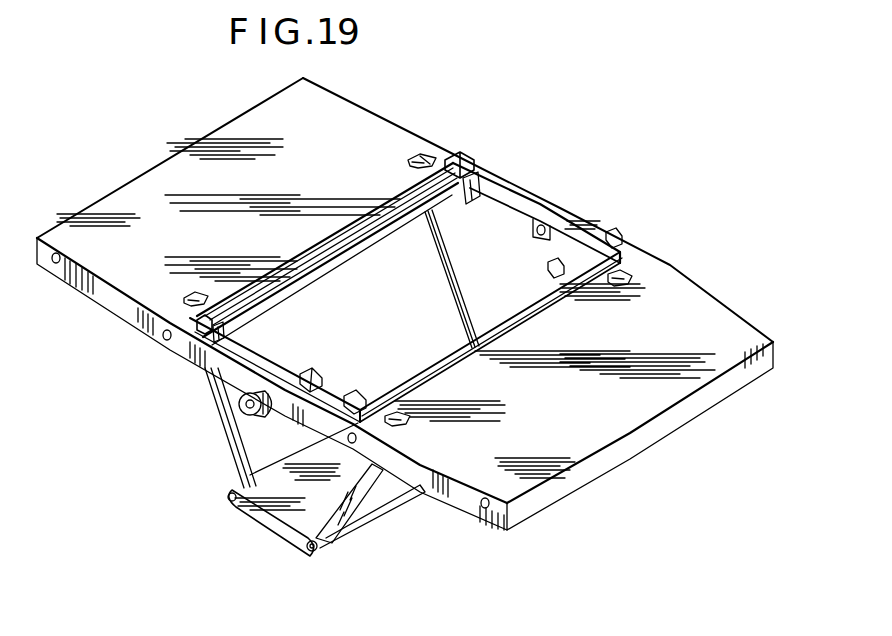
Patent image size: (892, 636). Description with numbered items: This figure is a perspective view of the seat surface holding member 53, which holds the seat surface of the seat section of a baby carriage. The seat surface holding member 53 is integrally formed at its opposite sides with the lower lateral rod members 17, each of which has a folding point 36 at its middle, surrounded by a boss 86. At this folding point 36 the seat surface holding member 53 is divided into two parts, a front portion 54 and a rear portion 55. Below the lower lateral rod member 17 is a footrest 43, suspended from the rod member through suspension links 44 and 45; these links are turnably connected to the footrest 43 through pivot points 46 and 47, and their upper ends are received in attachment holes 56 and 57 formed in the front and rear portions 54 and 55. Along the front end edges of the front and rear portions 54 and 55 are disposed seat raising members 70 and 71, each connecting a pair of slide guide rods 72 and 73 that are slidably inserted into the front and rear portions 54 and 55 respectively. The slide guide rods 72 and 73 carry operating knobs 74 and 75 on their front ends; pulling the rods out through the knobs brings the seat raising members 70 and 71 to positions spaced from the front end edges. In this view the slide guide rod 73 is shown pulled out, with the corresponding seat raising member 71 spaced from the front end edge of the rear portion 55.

The lower lateral rod member 17 is at (533, 190).
The folding point 36 is at (556, 208).
The footrest 43 is at (384, 508).
The suspension link 44 is at (517, 178).
The suspension link 45 is at (346, 512).
The pivot point 46 is at (229, 505).
The pivot point 47 is at (306, 551).
The seat surface holding member 53 is at (405, 293).
The front portion 54 is at (348, 126).
The rear portion 55 is at (684, 300).
The attachment hole 56 is at (428, 158).
The attachment hole 57 is at (634, 280).
The seat raising member 70 is at (342, 232).
The seat raising member 71 is at (434, 302).
The slide guide rod 72 is at (466, 166).
The slide guide rod 73 is at (352, 396).
The operating knob 74 is at (446, 234).
The operating knob 75 is at (308, 374).
The boss 86 is at (238, 404).